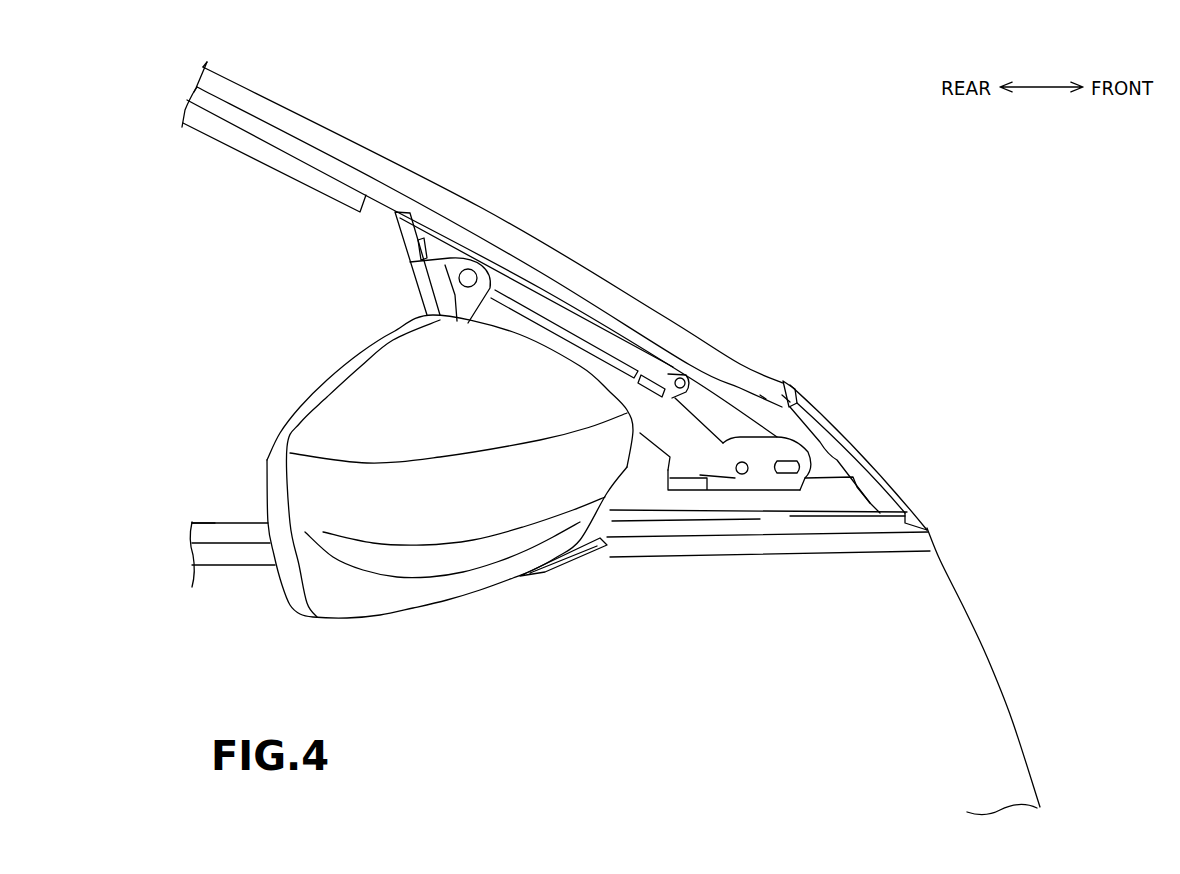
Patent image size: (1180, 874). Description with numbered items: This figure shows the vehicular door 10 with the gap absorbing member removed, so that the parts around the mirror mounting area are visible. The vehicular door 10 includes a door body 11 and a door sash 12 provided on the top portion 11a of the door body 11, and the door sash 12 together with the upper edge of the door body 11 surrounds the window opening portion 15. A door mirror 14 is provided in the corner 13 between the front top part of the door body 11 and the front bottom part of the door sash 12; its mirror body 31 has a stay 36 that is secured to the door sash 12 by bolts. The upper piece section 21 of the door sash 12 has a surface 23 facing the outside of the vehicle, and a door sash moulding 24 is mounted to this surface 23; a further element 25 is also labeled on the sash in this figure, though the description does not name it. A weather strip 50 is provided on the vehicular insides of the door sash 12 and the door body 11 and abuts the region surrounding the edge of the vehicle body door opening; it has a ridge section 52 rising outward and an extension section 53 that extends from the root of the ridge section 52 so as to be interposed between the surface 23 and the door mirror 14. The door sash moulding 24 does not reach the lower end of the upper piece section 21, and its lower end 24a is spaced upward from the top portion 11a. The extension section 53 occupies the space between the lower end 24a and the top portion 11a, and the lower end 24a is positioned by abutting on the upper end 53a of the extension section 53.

The vehicular door 10 is at (840, 204).
The door body 11 is at (997, 649).
The top portion of the door body 11a is at (716, 476).
The door sash 12 is at (259, 70).
The corner 13 is at (207, 439).
The door mirror 14 is at (287, 397).
The window opening portion 15 is at (213, 522).
The upper piece section 21 is at (330, 125).
The surface facing the outside of the vehicle 23 is at (193, 88).
The door sash moulding 24 is at (407, 187).
The lower end of the door sash moulding 24a is at (847, 492).
The glass run channel 25 is at (755, 380).
The mirror body 31 is at (352, 352).
The stay 36 is at (547, 337).
The weather strip 50 is at (911, 468).
The ridge section 52 is at (813, 397).
The extension section 53 is at (825, 447).
The upper end of the extension section 53a is at (787, 535).